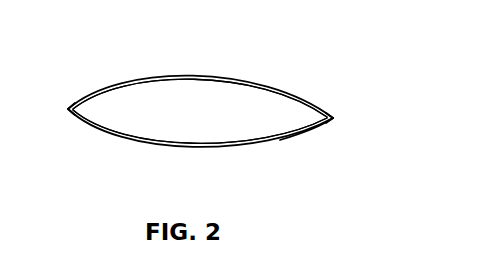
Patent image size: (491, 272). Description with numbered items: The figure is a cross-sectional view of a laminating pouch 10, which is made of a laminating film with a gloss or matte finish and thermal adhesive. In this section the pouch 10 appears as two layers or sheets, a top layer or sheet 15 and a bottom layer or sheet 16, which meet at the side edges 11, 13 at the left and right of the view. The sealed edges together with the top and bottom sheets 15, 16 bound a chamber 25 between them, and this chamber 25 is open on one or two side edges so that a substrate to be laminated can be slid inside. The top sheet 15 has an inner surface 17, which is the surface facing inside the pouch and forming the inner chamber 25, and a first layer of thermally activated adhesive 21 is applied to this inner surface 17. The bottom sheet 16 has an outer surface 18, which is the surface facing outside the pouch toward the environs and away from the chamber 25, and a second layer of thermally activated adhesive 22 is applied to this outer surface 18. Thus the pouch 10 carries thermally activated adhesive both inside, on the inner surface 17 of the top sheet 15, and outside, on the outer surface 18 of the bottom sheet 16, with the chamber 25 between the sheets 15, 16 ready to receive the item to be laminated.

The laminating pouch 10 is at (313, 48).
The side edge 11 is at (68, 109).
The side edge 13 is at (333, 118).
The top layer or sheet 15 is at (208, 75).
The bottom layer or sheet 16 is at (293, 137).
The inner surface 17 is at (245, 87).
The outer surface 18 is at (165, 147).
The first layer of thermally activated adhesive 21 is at (115, 90).
The second layer of thermally activated adhesive 22 is at (242, 150).
The chamber 25 is at (147, 137).